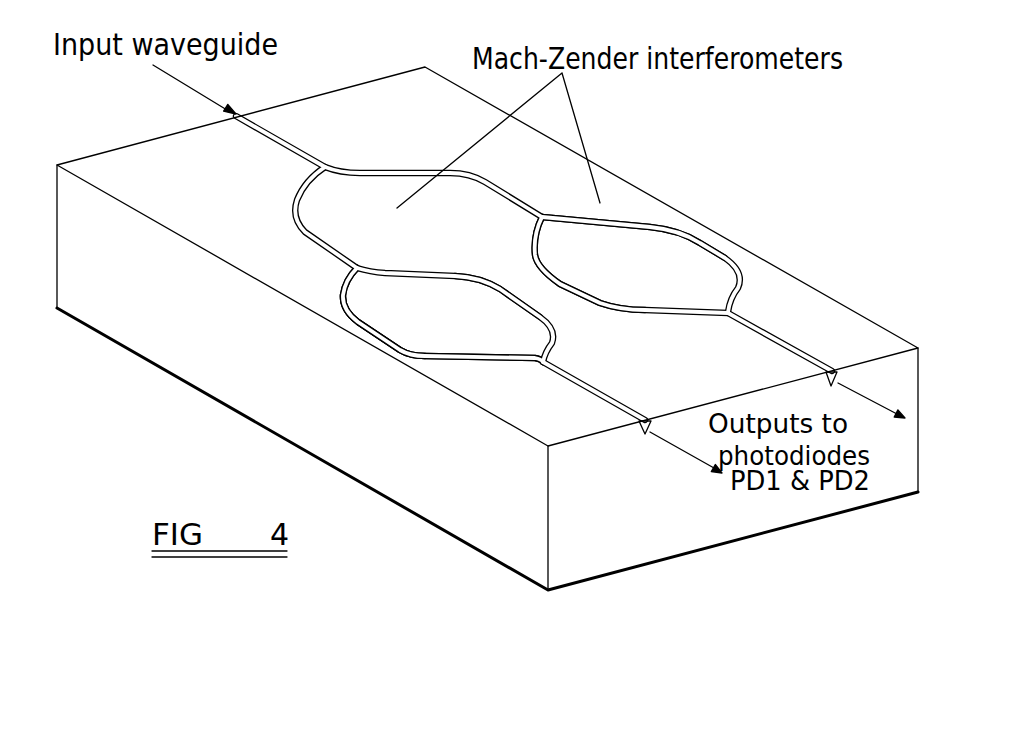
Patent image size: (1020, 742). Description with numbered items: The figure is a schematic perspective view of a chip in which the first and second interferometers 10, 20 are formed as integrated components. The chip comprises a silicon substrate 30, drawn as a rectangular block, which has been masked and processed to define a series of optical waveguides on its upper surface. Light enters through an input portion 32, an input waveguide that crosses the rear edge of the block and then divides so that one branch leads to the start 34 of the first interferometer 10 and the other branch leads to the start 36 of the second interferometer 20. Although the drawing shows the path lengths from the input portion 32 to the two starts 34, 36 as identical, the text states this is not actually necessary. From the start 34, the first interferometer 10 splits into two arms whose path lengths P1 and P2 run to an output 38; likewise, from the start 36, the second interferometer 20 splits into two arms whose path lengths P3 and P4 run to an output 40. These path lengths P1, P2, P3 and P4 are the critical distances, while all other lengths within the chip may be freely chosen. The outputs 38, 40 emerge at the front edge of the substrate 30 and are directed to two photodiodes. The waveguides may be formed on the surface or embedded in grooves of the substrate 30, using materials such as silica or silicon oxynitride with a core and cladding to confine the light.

The first interferometer 10 is at (802, 250).
The second interferometer 20 is at (377, 345).
The silicon substrate 30 is at (232, 358).
The input portion 32 is at (237, 117).
The start of the first interferometer 34 is at (540, 217).
The start of the second interferometer 36 is at (350, 273).
The output of the first interferometer 38 is at (733, 313).
The output of the second interferometer 40 is at (547, 362).
The path length P1 is at (718, 250).
The path length P2 is at (597, 285).
The path length P3 is at (528, 302).
The path length P4 is at (409, 357).